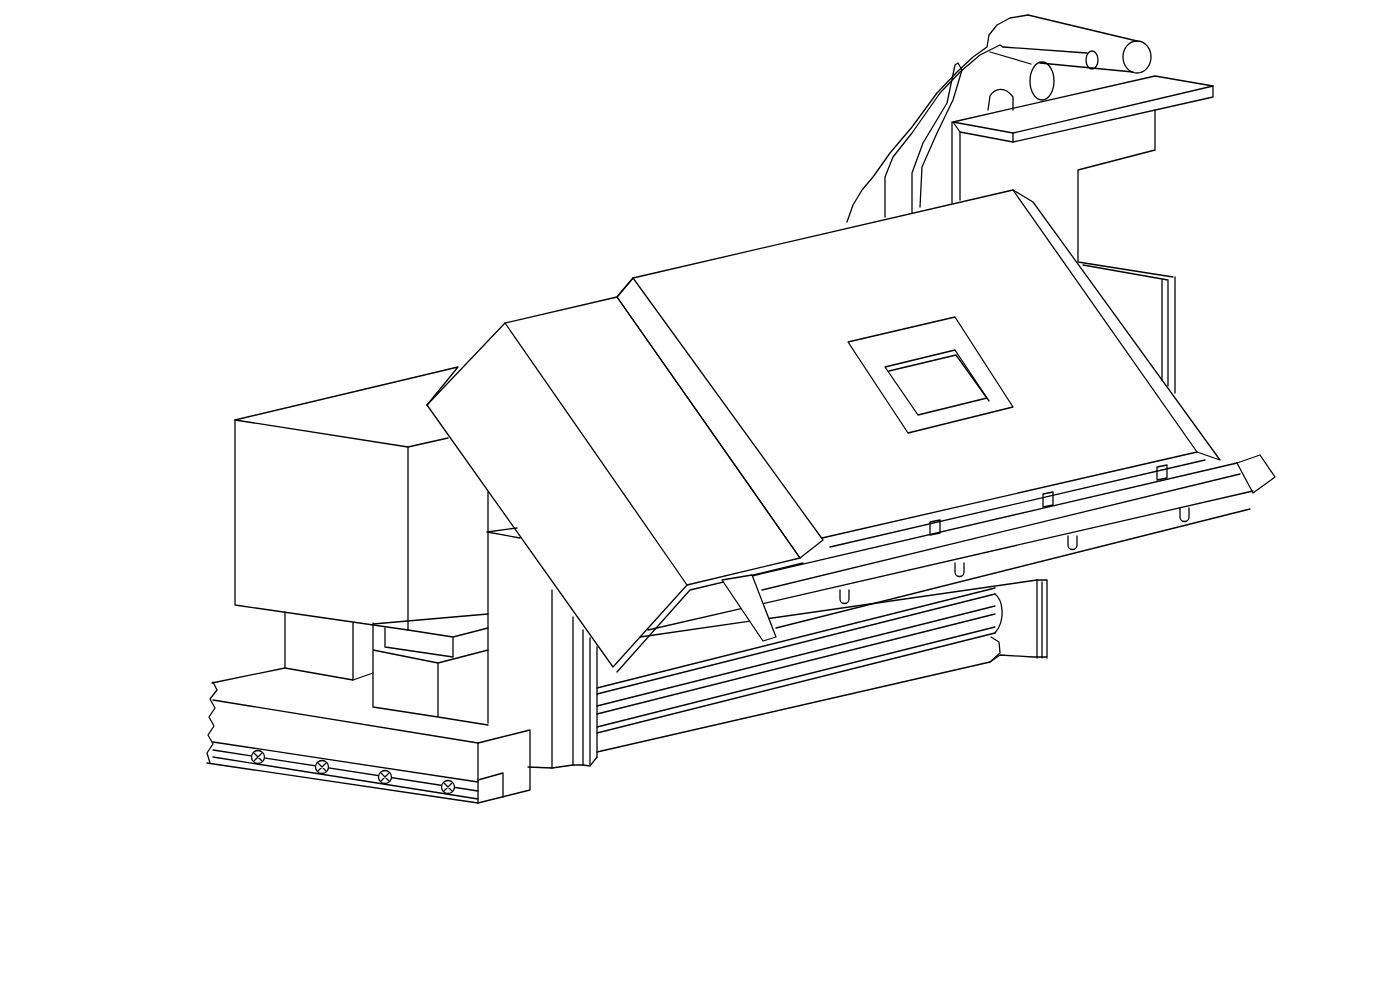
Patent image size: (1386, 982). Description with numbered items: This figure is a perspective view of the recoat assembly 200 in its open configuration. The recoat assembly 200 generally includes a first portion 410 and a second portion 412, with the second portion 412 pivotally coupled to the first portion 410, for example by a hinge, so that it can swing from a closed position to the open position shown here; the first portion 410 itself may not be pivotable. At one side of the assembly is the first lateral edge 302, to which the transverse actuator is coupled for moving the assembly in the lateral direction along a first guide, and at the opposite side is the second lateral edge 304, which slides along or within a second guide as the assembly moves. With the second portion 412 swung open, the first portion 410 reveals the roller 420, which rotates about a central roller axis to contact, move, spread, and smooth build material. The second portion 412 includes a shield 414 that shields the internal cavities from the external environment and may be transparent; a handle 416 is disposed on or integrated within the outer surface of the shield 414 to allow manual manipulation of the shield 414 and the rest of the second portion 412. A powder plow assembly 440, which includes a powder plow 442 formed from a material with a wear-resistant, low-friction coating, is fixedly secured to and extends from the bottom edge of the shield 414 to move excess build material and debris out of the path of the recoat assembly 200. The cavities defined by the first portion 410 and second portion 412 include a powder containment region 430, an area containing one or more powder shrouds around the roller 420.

The recoat assembly 200 is at (275, 160).
The first lateral edge 302 is at (1125, 160).
The second lateral edge 304 is at (222, 720).
The first portion 410 is at (228, 412).
The second portion 412 is at (1162, 430).
The shield 414 is at (678, 278).
The handle 416 is at (914, 393).
The roller 420 is at (923, 672).
The powder containment region 430 is at (723, 667).
The powder plow assembly 440 is at (1262, 518).
The powder plow 442 is at (1112, 512).